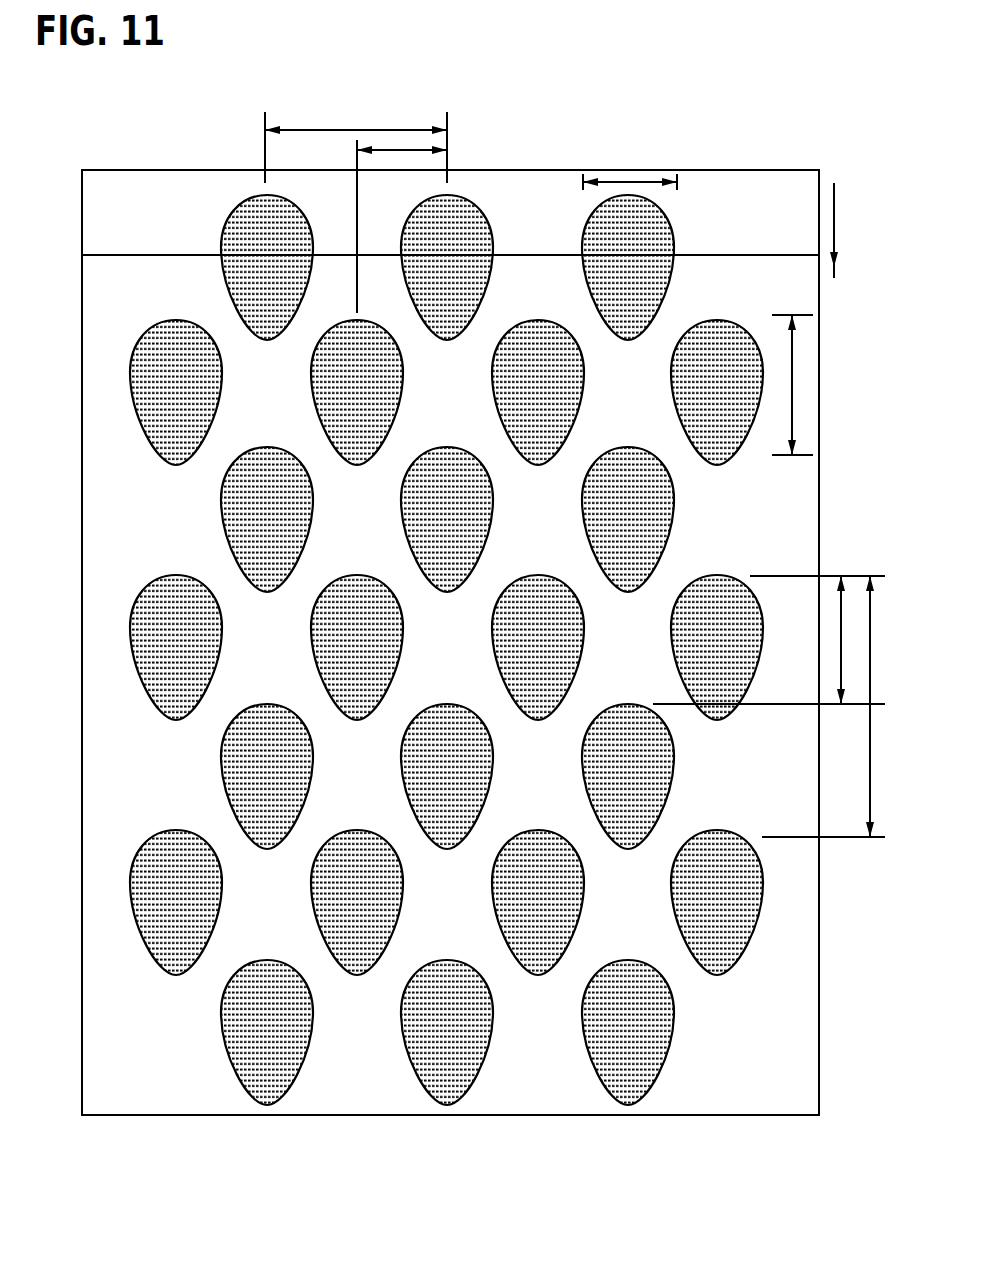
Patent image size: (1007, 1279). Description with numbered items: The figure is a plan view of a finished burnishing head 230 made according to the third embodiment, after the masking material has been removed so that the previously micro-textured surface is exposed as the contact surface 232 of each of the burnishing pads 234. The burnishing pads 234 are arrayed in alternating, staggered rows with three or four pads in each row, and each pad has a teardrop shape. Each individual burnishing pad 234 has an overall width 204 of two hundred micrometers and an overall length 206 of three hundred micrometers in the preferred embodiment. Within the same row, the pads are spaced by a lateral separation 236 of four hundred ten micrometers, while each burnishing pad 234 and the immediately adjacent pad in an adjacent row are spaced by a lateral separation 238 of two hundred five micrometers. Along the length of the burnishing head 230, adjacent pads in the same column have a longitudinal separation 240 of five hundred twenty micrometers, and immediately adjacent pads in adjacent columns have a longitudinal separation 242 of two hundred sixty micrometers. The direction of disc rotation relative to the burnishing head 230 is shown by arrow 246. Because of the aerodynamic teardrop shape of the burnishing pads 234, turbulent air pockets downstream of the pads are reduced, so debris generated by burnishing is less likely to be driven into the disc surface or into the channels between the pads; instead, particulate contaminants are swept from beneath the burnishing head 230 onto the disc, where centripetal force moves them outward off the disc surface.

The burnishing head 230 is at (146, 158).
The contact surface 232 is at (637, 1030).
The burnishing pad 234 is at (762, 882).
The overall width 204 is at (626, 180).
The overall length 206 is at (792, 386).
The lateral separation 236 is at (357, 130).
The lateral separation 238 is at (402, 150).
The longitudinal separation 240 is at (870, 768).
The longitudinal separation 242 is at (839, 632).
The arrow 246 is at (834, 222).